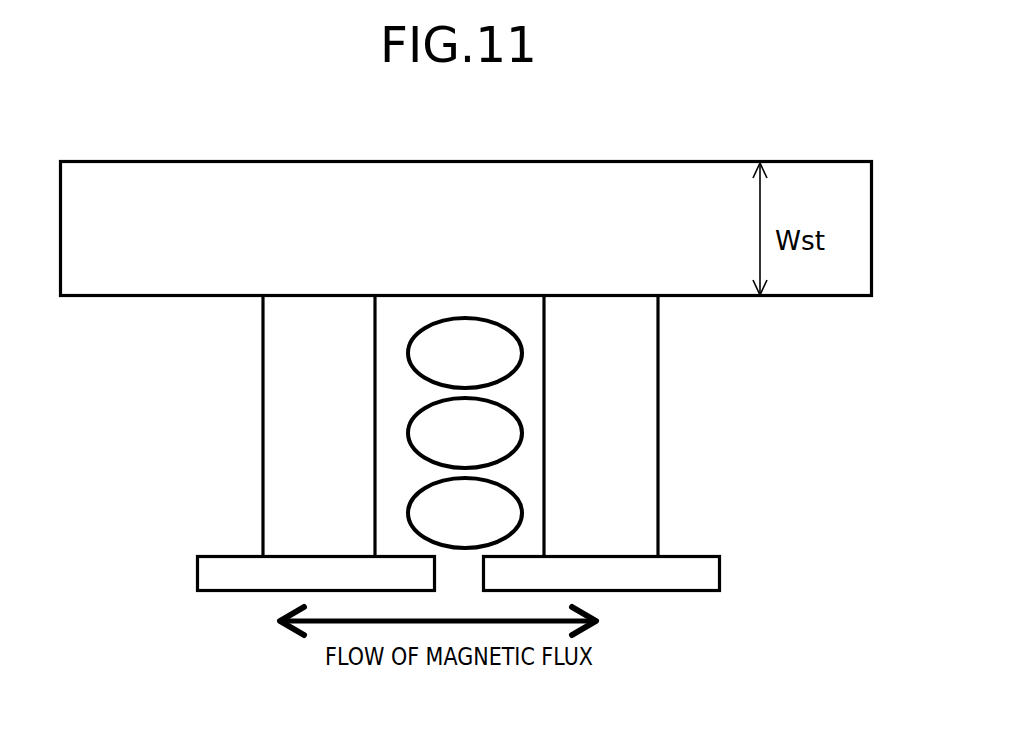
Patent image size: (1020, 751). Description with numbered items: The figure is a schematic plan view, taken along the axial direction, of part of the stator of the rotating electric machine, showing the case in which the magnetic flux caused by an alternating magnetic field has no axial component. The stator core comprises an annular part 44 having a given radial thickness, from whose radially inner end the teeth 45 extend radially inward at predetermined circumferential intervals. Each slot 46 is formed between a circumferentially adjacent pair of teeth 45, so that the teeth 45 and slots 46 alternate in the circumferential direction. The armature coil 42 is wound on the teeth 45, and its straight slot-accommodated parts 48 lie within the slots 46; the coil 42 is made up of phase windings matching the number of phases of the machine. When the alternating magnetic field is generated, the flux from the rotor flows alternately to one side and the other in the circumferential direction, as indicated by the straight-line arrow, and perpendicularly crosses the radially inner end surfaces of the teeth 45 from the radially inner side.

The annular part 44 is at (503, 197).
The teeth 45 is at (295, 445).
The slots 46 is at (523, 473).
The slot-accommodated parts 48 is at (503, 350).
The armature coil 42 is at (639, 433).